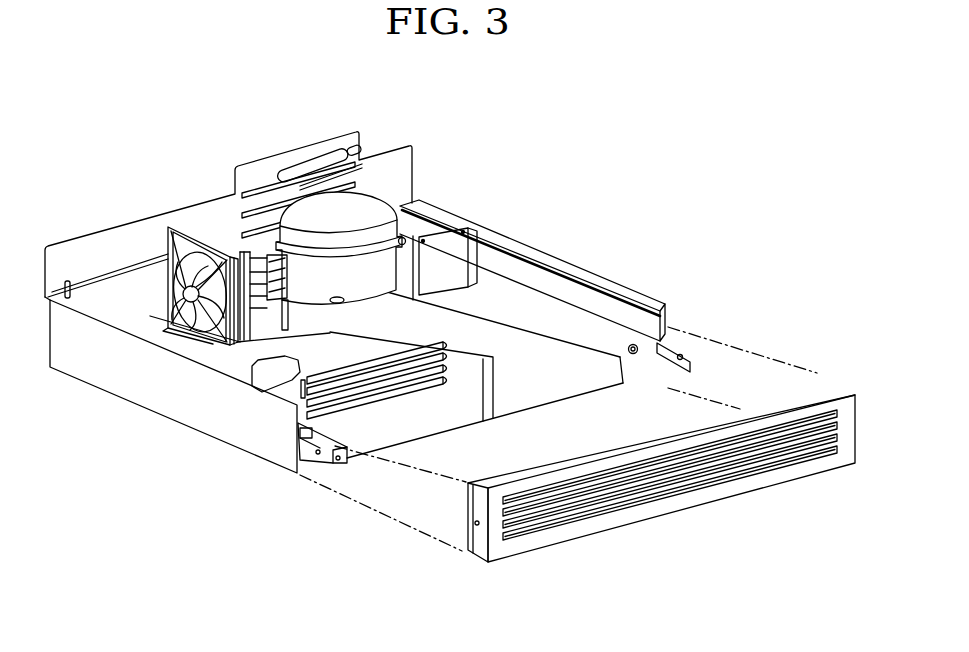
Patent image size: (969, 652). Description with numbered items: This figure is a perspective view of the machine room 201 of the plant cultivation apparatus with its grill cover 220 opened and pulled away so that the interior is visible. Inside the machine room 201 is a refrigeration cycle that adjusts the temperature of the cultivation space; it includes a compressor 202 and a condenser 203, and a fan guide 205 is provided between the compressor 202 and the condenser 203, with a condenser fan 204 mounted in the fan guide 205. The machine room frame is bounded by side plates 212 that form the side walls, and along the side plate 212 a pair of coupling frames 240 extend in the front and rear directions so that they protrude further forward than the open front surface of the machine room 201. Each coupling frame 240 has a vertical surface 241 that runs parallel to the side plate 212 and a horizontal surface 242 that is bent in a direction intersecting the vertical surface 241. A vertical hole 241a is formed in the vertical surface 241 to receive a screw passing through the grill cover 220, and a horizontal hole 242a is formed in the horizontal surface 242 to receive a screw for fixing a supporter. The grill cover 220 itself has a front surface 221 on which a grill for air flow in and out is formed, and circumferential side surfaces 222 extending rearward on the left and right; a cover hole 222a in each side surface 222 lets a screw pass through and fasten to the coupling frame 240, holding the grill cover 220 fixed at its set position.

The machine room 201 is at (476, 332).
The compressor 202 is at (345, 205).
The condenser 203 is at (387, 347).
The condenser fan 204 is at (187, 297).
The fan guide 205 is at (470, 392).
The side plate 212 is at (163, 395).
The grill cover 220 is at (621, 512).
The front surface 221 is at (673, 502).
The side surface 222 is at (443, 552).
The cover hole 222a is at (477, 527).
The coupling frame 240 is at (532, 378).
The vertical surface 241 is at (681, 357).
The vertical hole 241a is at (655, 325).
The horizontal surface 242 is at (681, 367).
The horizontal hole 242a is at (660, 380).